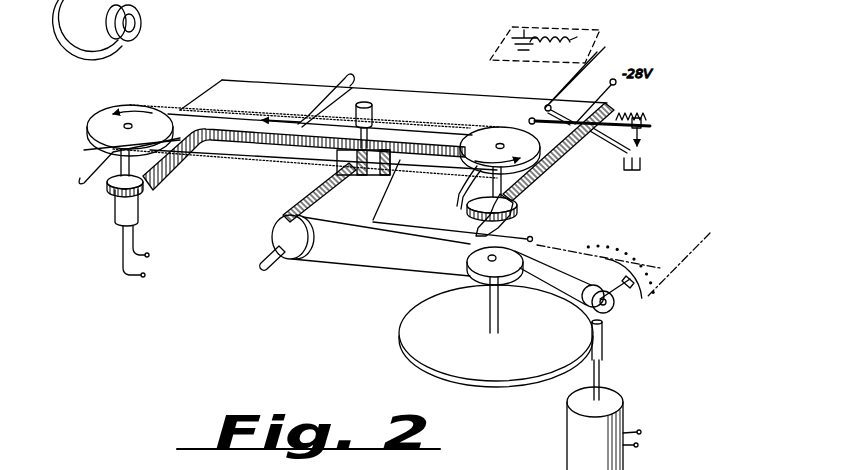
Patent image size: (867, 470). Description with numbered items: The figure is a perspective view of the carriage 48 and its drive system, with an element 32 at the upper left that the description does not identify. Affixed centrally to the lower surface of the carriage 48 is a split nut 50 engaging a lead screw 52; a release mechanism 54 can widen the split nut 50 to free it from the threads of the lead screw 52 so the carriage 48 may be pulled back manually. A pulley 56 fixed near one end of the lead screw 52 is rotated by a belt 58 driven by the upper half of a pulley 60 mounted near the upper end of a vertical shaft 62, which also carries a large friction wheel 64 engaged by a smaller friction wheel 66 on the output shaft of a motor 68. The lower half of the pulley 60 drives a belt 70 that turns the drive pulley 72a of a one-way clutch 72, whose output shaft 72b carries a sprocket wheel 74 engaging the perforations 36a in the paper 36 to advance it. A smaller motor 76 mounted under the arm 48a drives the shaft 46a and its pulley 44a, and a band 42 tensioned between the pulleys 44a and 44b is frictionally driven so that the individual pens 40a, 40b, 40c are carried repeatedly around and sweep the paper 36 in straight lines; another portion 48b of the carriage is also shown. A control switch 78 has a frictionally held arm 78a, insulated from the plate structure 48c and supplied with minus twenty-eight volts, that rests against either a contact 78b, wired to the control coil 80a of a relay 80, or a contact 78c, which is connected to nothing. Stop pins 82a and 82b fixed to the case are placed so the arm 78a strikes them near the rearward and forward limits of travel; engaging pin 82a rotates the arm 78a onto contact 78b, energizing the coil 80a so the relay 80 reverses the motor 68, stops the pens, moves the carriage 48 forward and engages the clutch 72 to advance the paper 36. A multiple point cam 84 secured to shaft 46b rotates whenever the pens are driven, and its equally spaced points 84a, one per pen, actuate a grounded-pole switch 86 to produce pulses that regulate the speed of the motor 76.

The headphone 32 is at (142, 21).
The paper 36 is at (683, 267).
The perforations 36a is at (610, 250).
The wire hook 40a is at (97, 160).
The wire hook 40b is at (338, 89).
The wire hook 40c is at (455, 210).
The band 42 is at (257, 115).
The pulley 44a is at (104, 108).
The pulley 44b is at (483, 140).
The shaft 46a is at (133, 162).
The shaft 46b is at (467, 186).
The carriage 48 is at (209, 82).
The arm 48a is at (107, 180).
The carriage hatched arm 48b is at (593, 151).
The plate structure 48c is at (250, 81).
The split nut 50 is at (337, 172).
The lead screw 52 is at (320, 198).
The release mechanism 54 is at (372, 106).
The pulley 56 is at (293, 250).
The belt 58 is at (338, 263).
The pulley 60 is at (467, 273).
The vertical shaft 62 is at (488, 312).
The large friction wheel 64 is at (400, 337).
The smaller friction wheel 66 is at (603, 357).
The motor 68 is at (617, 400).
The belt 70 is at (553, 300).
The one-way clutch 72 is at (623, 297).
The drive pulley 72a is at (613, 317).
The output shaft 72b is at (610, 257).
The sprocket wheel 74 is at (647, 267).
The motor 76 is at (110, 210).
The control switch 78 is at (654, 145).
The arm 78a is at (650, 124).
The contact 78b is at (597, 80).
The contact 78c is at (517, 114).
The relay 80 is at (520, 27).
The control coil 80a is at (577, 37).
The stop pin 82a is at (647, 113).
The stop pin 82b is at (641, 170).
The multiple point cam 84 is at (450, 212).
The points 84a is at (503, 237).
The switch 86 is at (522, 208).